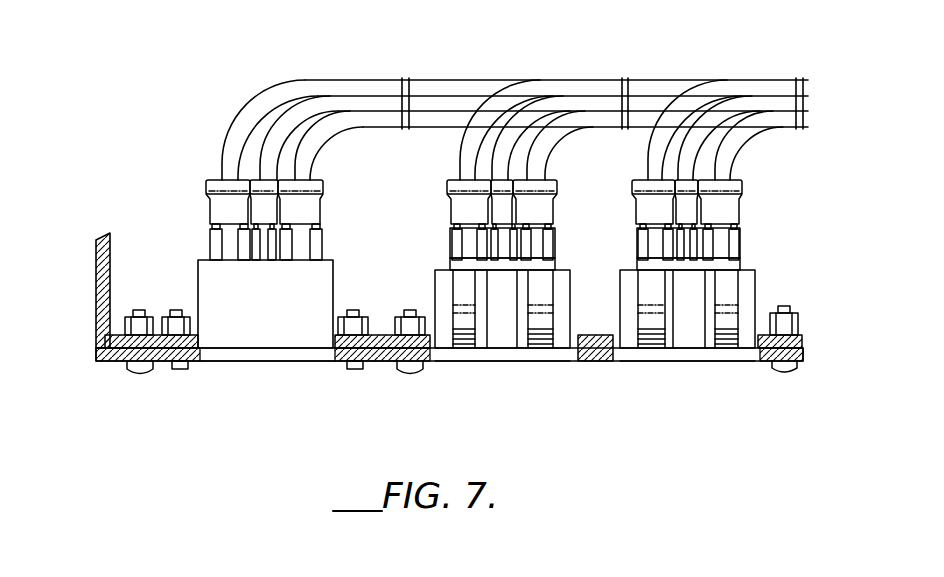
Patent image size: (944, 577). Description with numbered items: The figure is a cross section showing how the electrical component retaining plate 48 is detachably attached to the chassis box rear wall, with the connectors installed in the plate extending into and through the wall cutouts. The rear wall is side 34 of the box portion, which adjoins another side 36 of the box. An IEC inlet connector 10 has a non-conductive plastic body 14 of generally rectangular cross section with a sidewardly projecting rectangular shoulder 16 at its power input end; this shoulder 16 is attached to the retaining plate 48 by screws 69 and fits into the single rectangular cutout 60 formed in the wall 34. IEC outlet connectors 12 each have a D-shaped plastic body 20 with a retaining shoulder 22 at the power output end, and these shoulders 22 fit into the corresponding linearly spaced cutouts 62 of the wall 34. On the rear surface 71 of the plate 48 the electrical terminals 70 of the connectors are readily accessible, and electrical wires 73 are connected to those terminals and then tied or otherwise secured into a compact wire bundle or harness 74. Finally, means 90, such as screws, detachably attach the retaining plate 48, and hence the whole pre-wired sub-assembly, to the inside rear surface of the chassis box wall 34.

The IEC inlet connector 10 is at (277, 366).
The IEC outlet connector 12 is at (528, 362).
The body 14 is at (340, 284).
The shoulder 16 is at (291, 363).
The body 20 is at (570, 292).
The retaining shoulder 22 is at (550, 355).
The side 34 is at (391, 376).
The side 36 is at (95, 287).
The electrical component retaining plate 48 is at (162, 328).
The cutout 60 is at (157, 354).
The cutouts 62 is at (578, 360).
The screws 69 is at (179, 367).
The electrical terminals 70 is at (320, 240).
The rear surface 71 is at (362, 341).
The electrical wires 73 is at (275, 146).
The wire bundle 74 is at (638, 80).
The means 90 is at (134, 378).